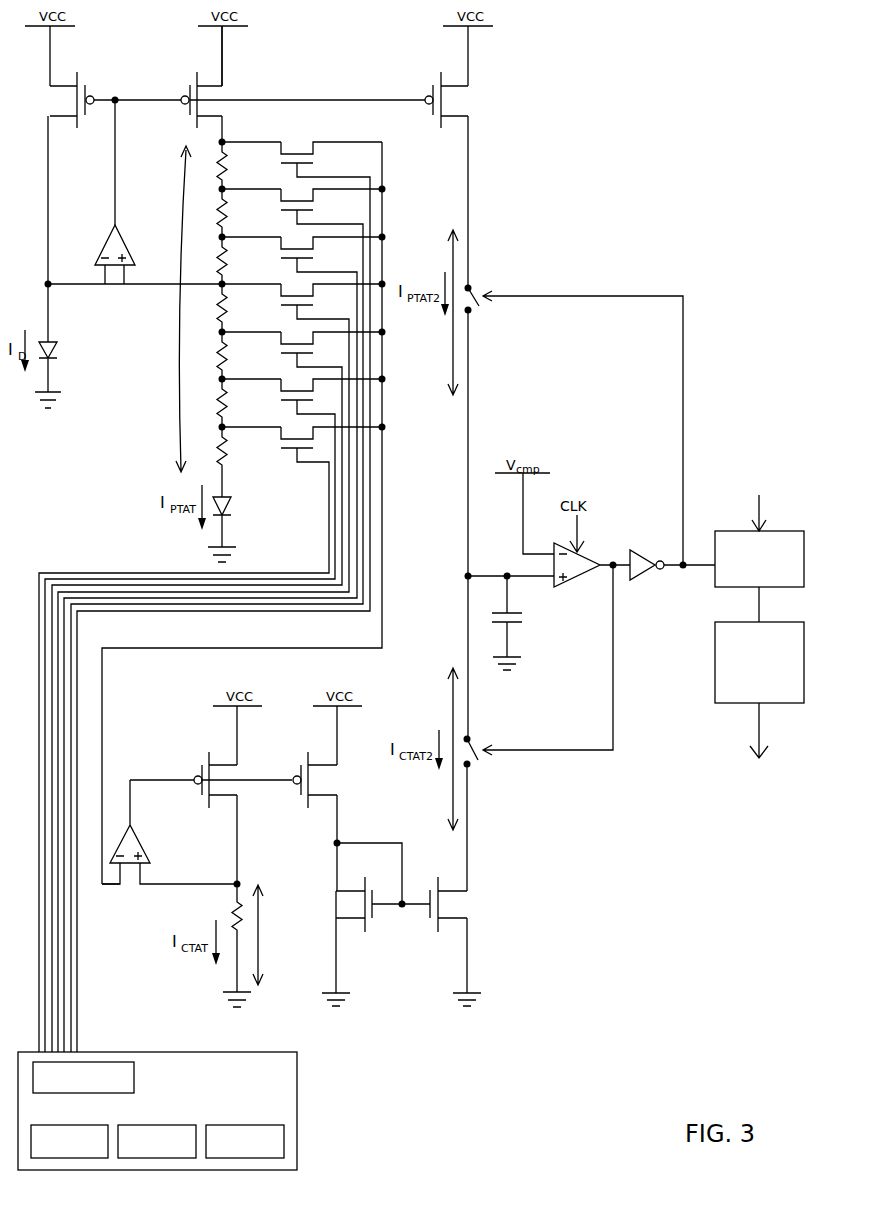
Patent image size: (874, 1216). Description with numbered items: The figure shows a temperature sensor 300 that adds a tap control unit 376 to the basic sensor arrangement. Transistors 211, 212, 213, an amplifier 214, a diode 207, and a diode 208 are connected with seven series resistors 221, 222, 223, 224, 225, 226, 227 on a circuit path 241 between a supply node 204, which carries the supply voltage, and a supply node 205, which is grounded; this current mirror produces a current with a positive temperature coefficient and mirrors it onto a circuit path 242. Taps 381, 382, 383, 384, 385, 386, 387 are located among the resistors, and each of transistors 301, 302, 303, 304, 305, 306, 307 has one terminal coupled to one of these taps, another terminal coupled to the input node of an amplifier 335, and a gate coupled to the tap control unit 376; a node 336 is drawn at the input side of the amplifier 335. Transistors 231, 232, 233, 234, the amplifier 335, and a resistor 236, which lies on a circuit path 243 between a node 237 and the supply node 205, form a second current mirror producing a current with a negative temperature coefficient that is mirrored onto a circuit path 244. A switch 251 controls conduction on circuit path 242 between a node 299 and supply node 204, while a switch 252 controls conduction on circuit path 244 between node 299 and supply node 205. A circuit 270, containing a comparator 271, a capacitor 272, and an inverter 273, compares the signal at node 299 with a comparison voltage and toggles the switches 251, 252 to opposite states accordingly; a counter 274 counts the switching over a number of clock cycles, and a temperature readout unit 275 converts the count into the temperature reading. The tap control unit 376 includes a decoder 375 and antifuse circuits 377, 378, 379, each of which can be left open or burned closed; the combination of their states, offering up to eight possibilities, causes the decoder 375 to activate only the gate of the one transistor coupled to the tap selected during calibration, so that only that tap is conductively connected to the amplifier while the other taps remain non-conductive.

The temperature sensor 300 is at (605, 48).
The supply node 204 is at (223, 57).
The supply node 205 is at (224, 540).
The diode 207 is at (52, 347).
The diode 208 is at (226, 499).
The transistor 211 is at (78, 80).
The transistor 212 is at (198, 80).
The transistor 213 is at (441, 80).
The amplifier 214 is at (122, 240).
The resistor 221 is at (210, 165).
The resistor 222 is at (210, 213).
The resistor 223 is at (210, 260).
The resistor 224 is at (210, 308).
The resistor 225 is at (210, 355).
The resistor 226 is at (210, 403).
The resistor 227 is at (210, 462).
The transistor 231 is at (210, 760).
The transistor 232 is at (310, 760).
The transistor 233 is at (367, 882).
The transistor 234 is at (440, 882).
The resistor 236 is at (232, 921).
The node 237 is at (233, 882).
The circuit path 241 is at (179, 402).
The circuit path 242 is at (452, 355).
The circuit path 243 is at (259, 938).
The circuit path 244 is at (452, 808).
The switch 251 is at (475, 292).
The switch 252 is at (473, 744).
The circuit 270 is at (750, 428).
The comparator 271 is at (587, 587).
The capacitor 272 is at (523, 617).
The inverter 273 is at (642, 557).
The counter 274 is at (734, 531).
The temperature readout unit 275 is at (736, 622).
The node 299 is at (465, 576).
The transistor 301 is at (229, 596).
The transistor 302 is at (226, 619).
The transistor 303 is at (223, 643).
The transistor 304 is at (220, 667).
The transistor 305 is at (217, 691).
The transistor 306 is at (213, 714).
The transistor 307 is at (210, 738).
The amplifier 335 is at (137, 846).
The node 336 is at (104, 886).
The decoder 375 is at (134, 1075).
The tap control unit 376 is at (297, 1080).
The antifuse circuit 377 is at (63, 1125).
The antifuse circuit 378 is at (151, 1125).
The antifuse circuit 379 is at (239, 1125).
The tap 381 is at (232, 141).
The tap 382 is at (232, 188).
The tap 383 is at (232, 236).
The tap 384 is at (232, 283).
The tap 385 is at (232, 331).
The tap 386 is at (232, 378).
The tap 387 is at (232, 426).